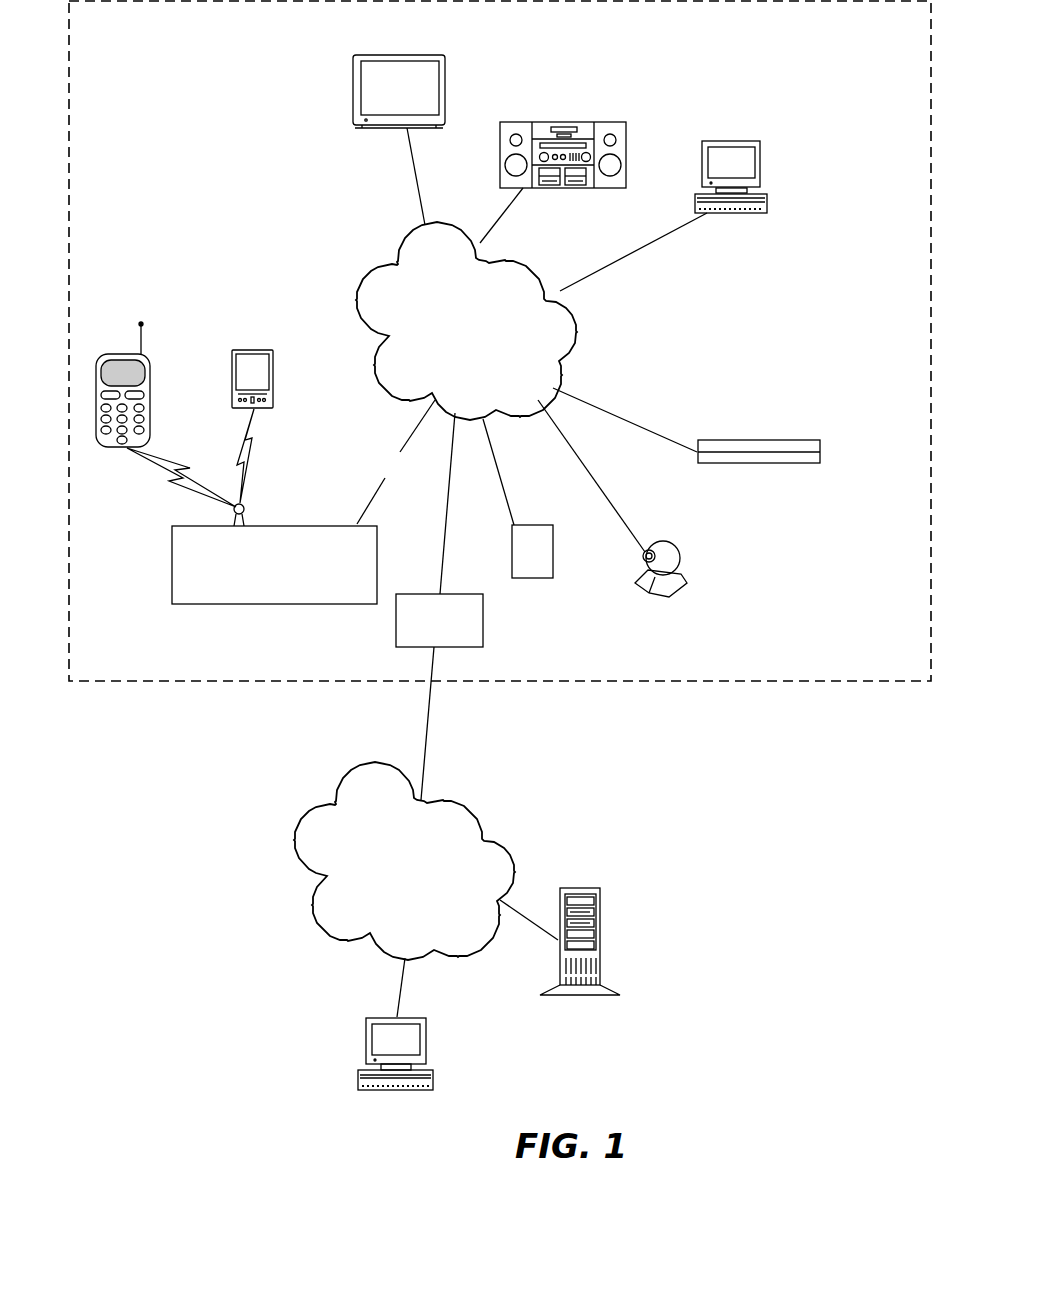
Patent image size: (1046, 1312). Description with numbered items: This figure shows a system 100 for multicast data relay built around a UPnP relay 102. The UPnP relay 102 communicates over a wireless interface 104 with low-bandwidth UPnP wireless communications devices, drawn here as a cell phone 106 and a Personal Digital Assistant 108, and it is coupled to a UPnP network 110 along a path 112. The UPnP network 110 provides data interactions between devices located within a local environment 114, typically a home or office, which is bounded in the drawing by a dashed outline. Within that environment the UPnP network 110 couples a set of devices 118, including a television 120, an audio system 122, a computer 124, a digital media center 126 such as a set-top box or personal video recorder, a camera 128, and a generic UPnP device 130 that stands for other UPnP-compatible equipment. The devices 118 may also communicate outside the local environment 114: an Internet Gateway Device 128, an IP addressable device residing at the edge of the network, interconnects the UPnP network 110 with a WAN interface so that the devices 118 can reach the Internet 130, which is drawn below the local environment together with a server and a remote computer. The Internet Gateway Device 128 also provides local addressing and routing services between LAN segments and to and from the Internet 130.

The system 100 is at (812, 915).
The UPnP relay 102 is at (200, 601).
The wireless interface 104 is at (244, 517).
The cell phone 106 is at (150, 400).
The Personal Digital Assistant (PDA) 108 is at (274, 364).
The UPnP network 110 is at (548, 279).
The path 112 is at (396, 462).
The local environment 114 is at (845, 682).
The devices 118 is at (633, 49).
The television 120 is at (446, 88).
The audio system 122 is at (563, 121).
The computer 124 is at (743, 140).
The digital media center 126 is at (762, 441).
The camera / Internet Gateway Device (IGD) 128 is at (681, 554).
The generic UPnP device / Internet 130 is at (532, 578).